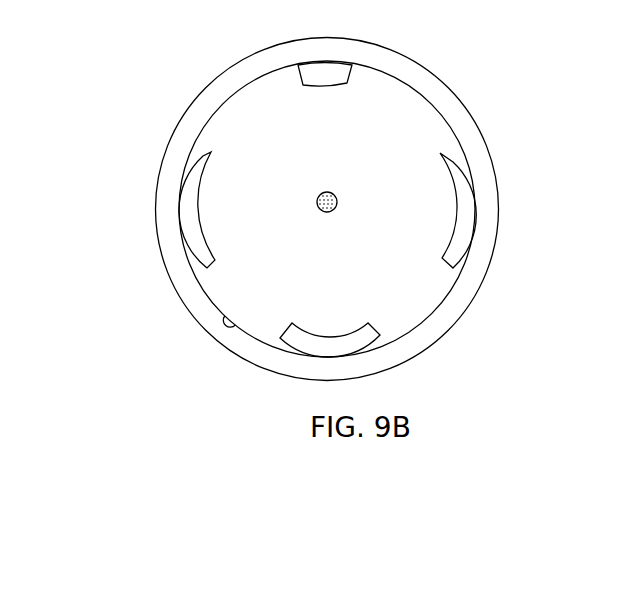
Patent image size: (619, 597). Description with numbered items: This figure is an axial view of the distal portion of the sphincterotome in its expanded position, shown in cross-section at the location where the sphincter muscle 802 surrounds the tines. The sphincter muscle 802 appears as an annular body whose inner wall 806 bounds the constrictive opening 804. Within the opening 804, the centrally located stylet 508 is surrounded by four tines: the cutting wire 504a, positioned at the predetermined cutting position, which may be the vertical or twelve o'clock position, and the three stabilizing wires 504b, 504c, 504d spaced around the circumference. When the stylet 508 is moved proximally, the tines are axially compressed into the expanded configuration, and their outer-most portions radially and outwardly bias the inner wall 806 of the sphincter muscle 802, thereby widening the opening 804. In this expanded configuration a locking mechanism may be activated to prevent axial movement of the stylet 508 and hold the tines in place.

The sphincter muscle 802 is at (188, 137).
The opening 804 is at (379, 130).
The cutting wire 504a is at (325, 72).
The stabilizing wire 504b is at (190, 218).
The stabilizing wire 504c is at (470, 208).
The stabilizing wire 504d is at (347, 342).
The stylet 508 is at (318, 206).
The inner wall 806 is at (224, 322).